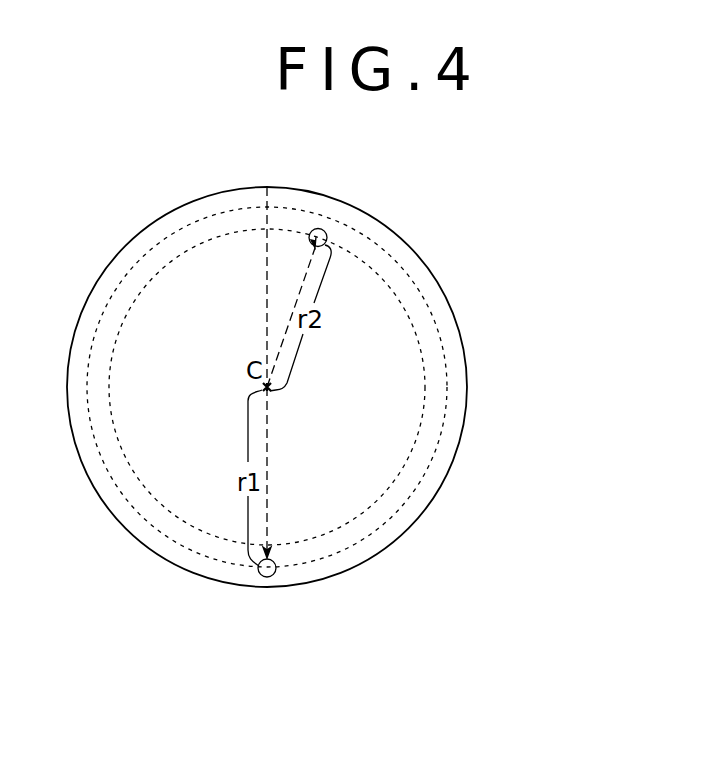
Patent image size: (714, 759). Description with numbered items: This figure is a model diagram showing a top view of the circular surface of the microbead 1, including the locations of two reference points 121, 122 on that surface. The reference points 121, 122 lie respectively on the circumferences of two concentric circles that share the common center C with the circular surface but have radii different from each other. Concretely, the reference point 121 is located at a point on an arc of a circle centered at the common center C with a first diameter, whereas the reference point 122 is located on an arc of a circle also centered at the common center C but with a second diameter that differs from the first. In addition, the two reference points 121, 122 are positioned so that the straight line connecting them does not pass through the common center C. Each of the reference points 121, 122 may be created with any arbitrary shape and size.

The microbead 1 is at (460, 320).
The reference point 121 is at (267, 587).
The reference point 122 is at (320, 228).